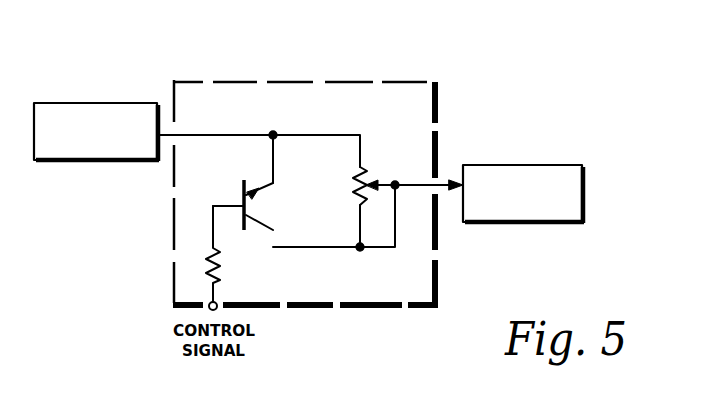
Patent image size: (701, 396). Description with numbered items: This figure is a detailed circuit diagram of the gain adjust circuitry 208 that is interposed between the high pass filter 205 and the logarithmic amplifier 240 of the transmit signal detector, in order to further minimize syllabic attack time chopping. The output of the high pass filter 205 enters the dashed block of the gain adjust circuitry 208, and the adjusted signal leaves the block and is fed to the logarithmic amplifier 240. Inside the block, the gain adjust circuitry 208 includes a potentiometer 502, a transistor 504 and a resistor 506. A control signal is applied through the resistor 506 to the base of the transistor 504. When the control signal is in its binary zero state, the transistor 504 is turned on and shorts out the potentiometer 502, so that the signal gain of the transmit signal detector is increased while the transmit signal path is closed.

The high pass filter 205 is at (90, 103).
The gain adjust circuitry 208 is at (298, 82).
The logarithmic amplifier 240 is at (551, 165).
The potentiometer 502 is at (357, 180).
The transistor 504 is at (265, 206).
The resistor 506 is at (222, 262).